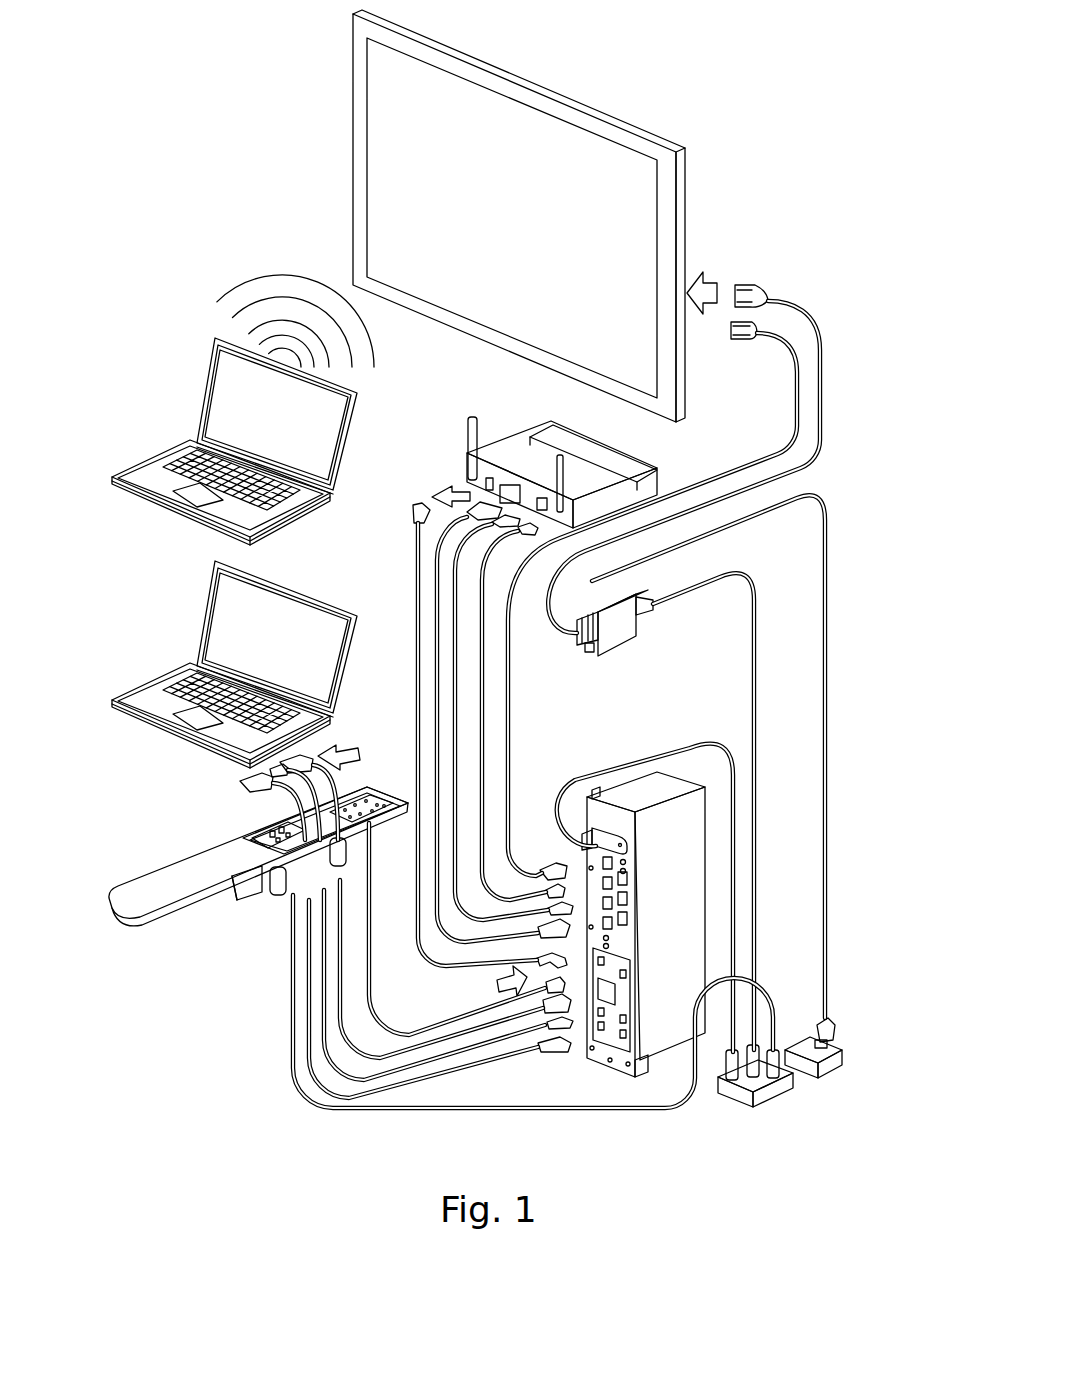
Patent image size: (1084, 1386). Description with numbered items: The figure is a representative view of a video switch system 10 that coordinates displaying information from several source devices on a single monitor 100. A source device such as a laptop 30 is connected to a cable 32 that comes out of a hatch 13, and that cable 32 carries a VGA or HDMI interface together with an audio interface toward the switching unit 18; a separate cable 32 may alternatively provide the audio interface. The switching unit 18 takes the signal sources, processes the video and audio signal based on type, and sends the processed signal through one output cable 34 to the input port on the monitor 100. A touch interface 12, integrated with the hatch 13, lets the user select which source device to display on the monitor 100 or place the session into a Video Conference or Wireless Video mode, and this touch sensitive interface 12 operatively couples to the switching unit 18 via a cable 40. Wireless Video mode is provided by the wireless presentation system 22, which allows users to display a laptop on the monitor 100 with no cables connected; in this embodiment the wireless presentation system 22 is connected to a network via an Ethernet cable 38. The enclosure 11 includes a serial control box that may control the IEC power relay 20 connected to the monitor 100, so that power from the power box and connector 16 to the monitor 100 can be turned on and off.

The video switch system 10 is at (276, 110).
The monitor 100 is at (482, 194).
The laptop 30 is at (160, 452).
The hatch 13 is at (172, 883).
The touch interface 12 is at (392, 797).
The cable 32 is at (293, 803).
The wireless presentation system 22 is at (628, 462).
The IEC power relay 20 is at (617, 625).
The enclosure 11 is at (643, 956).
The power box and connector 16 is at (618, 822).
The switching unit 18 is at (630, 998).
The output cable 34 is at (798, 400).
The Ethernet cable 38 is at (826, 745).
The cable 40 is at (388, 1032).